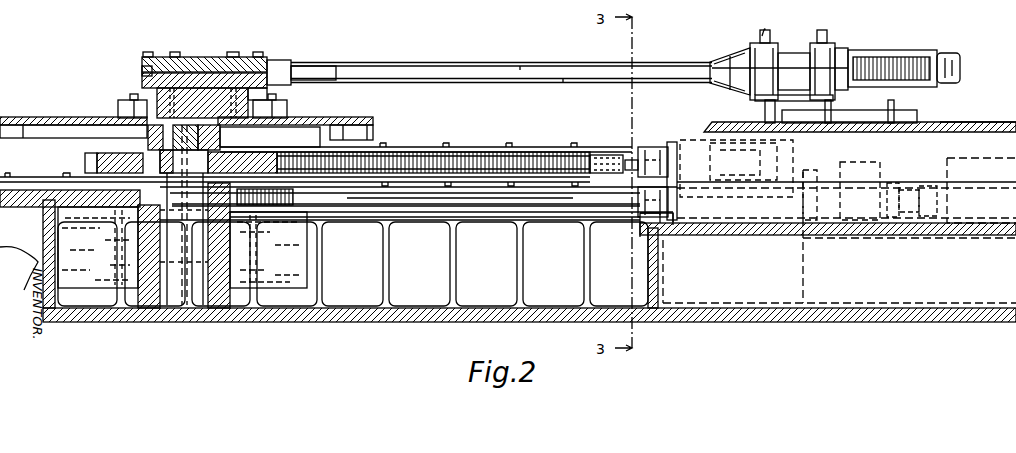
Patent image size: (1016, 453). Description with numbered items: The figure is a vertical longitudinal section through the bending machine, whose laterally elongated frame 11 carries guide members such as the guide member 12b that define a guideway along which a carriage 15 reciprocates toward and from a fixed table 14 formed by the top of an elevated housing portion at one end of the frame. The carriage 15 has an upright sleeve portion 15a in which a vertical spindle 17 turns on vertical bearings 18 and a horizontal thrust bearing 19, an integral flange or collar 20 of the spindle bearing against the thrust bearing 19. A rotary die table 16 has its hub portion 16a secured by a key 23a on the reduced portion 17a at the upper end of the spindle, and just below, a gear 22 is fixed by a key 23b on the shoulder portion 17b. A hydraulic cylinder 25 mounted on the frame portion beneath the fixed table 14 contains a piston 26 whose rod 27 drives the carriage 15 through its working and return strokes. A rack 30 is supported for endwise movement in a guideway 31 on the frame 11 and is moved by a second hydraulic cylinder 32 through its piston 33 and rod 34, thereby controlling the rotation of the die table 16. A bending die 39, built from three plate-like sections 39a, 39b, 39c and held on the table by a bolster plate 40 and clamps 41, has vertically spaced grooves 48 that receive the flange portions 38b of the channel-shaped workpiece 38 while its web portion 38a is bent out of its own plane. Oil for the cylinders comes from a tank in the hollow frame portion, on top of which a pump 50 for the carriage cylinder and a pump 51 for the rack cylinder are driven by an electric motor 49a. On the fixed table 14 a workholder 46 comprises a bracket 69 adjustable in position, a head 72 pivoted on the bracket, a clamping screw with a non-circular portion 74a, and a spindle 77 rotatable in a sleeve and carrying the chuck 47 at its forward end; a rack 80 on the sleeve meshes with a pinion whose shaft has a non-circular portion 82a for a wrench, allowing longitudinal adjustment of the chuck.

The frame 11 is at (912, 322).
The guide member 12b is at (484, 212).
The fixed table 14 is at (994, 122).
The carriage 15 is at (45, 184).
The upright sleeve portion 15a is at (248, 240).
The rotary die table 16 is at (340, 118).
The hub portion 16a is at (118, 130).
The vertical spindle 17 is at (232, 250).
The reduced portion 17a is at (225, 138).
The shoulder portion 17b is at (280, 148).
The vertical bearings 18 is at (142, 227).
The horizontal thrust bearing 19 is at (205, 200).
The integral flange or collar 20 is at (176, 166).
The gear 22 is at (65, 105).
The key 23a is at (150, 95).
The key 23b is at (88, 157).
The hydraulic cylinder 25 is at (834, 174).
The piston 26 is at (694, 233).
The rod 27 is at (415, 203).
The rack 30 is at (468, 150).
The guideway 31 is at (536, 150).
The hydraulic cylinder 32 is at (686, 147).
The piston 33 is at (712, 122).
The rod 34 is at (628, 162).
The workpiece 38 is at (448, 63).
The web portion 38a is at (522, 66).
The flange portions 38b is at (563, 79).
The bending die 39 is at (203, 57).
The plate-like section 39a is at (140, 52).
The plate-like section 39b is at (172, 55).
The plate-like section 39c is at (140, 70).
The bolster plate 40 is at (270, 98).
The clamps 41 is at (315, 68).
The workholder 46 is at (794, 53).
The chuck 47 is at (740, 52).
The grooves 48 is at (268, 47).
The electric motor 49a is at (978, 167).
The pump 50 is at (868, 183).
The pump 51 is at (808, 170).
The bracket 69 is at (905, 112).
The head 72 is at (800, 92).
The non-circular portion 74a is at (775, 20).
The spindle 77 is at (878, 56).
The rack 80 is at (924, 60).
The non-circular portion 82a is at (825, 33).